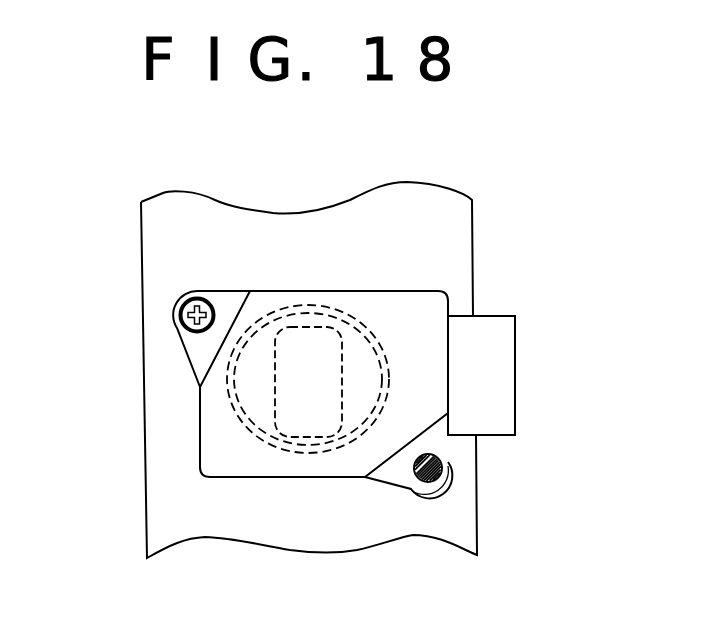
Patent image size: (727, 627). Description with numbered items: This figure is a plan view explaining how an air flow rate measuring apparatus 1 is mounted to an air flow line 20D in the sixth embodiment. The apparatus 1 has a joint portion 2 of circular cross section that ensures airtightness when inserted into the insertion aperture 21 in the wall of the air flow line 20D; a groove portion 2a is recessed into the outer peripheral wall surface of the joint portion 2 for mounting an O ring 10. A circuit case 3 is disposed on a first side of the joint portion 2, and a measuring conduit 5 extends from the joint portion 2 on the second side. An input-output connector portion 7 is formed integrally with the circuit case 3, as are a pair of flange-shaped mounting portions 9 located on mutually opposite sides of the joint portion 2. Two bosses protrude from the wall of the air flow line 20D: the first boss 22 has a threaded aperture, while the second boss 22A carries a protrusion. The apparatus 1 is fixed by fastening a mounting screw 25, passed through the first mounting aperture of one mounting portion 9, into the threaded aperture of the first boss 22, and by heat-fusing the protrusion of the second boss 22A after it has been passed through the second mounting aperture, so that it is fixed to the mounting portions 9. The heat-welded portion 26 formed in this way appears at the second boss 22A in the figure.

The air flow rate measuring apparatus 1 is at (520, 380).
The joint portion 2 is at (247, 403).
The groove portion 2a is at (348, 440).
The circuit case 3 is at (440, 292).
The measuring conduit 5 is at (305, 438).
The input-output connector portion 7 is at (514, 330).
The mounting portions 9 is at (186, 355).
The O ring 10 is at (262, 420).
The air flow line 20D is at (480, 205).
The insertion aperture 21 is at (268, 446).
The first boss 22 is at (183, 293).
The second boss 22A is at (412, 490).
The mounting screw 25 is at (176, 312).
The heat-welded portion 26 is at (450, 477).